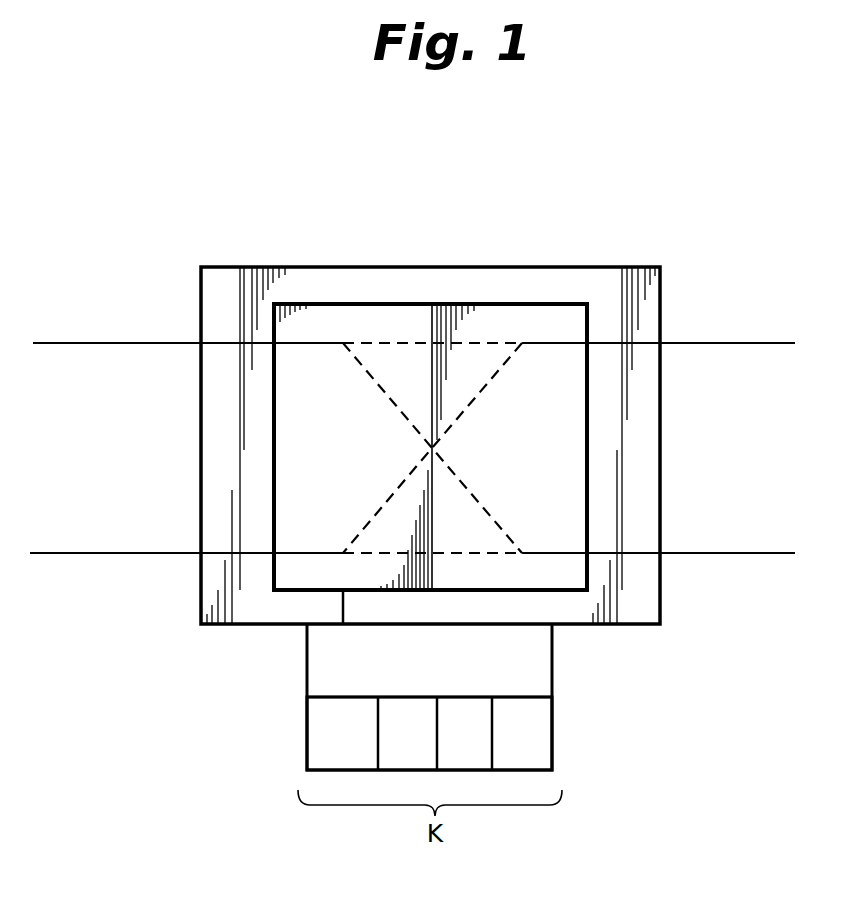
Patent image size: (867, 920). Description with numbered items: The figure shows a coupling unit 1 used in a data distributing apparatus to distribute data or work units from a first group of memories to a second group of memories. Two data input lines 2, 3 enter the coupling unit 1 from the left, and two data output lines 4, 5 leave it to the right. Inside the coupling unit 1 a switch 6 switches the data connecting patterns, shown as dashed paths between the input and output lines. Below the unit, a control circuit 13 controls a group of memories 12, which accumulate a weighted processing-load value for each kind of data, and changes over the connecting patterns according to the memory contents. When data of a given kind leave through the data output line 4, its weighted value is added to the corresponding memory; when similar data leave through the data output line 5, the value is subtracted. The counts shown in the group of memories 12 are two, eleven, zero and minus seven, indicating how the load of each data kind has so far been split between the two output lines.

The coupling unit 1 is at (443, 267).
The data input line 2 is at (80, 342).
The data input line 3 is at (70, 552).
The data output line 4 is at (762, 343).
The data output line 5 is at (770, 553).
The switch 6 is at (568, 304).
The group of memories 12 is at (553, 748).
The control circuit 13 is at (553, 670).